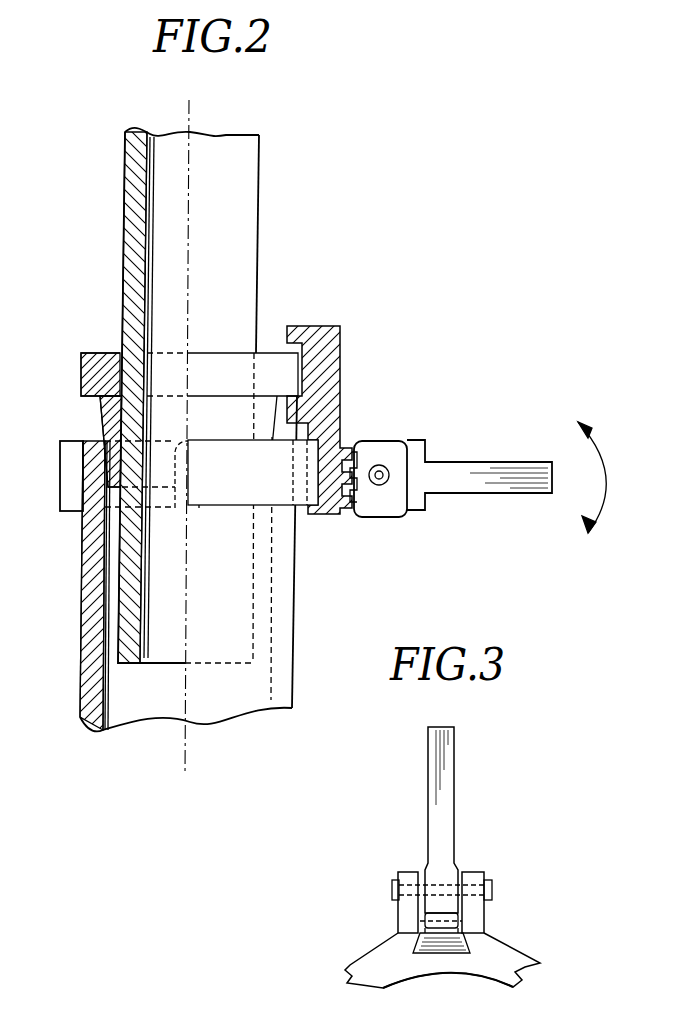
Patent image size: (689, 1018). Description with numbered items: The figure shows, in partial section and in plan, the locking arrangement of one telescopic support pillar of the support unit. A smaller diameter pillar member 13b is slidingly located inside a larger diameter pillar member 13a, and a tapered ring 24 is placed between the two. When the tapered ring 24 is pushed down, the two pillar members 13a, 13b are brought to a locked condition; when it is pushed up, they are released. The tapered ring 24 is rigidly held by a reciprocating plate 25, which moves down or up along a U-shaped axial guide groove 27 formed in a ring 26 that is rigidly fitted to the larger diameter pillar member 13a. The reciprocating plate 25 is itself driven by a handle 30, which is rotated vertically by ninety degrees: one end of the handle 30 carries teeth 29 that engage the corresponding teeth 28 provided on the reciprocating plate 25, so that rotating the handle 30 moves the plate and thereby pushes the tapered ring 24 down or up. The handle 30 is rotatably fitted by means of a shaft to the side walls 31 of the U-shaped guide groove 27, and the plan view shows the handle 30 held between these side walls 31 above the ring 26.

In FIG. 2, the larger diameter pillar member 13a is at (283, 625).
In FIG. 2, the smaller diameter pillar member 13b is at (259, 283).
In FIG. 2, the tapered ring 24 is at (96, 356).
In FIG. 2, the reciprocating plate 25 is at (318, 383).
In FIG. 2, the ring 26 is at (70, 502).
In FIG. 3, the ring 26 is at (510, 968).
In FIG. 3, the U-shaped axial guide groove 27 is at (460, 908).
In FIG. 2, the teeth 28 is at (349, 444).
In FIG. 2, the teeth 29 is at (349, 497).
In FIG. 2, the handle 30 is at (467, 468).
In FIG. 3, the handle 30 is at (448, 790).
In FIG. 3, the side walls 31 is at (473, 873).